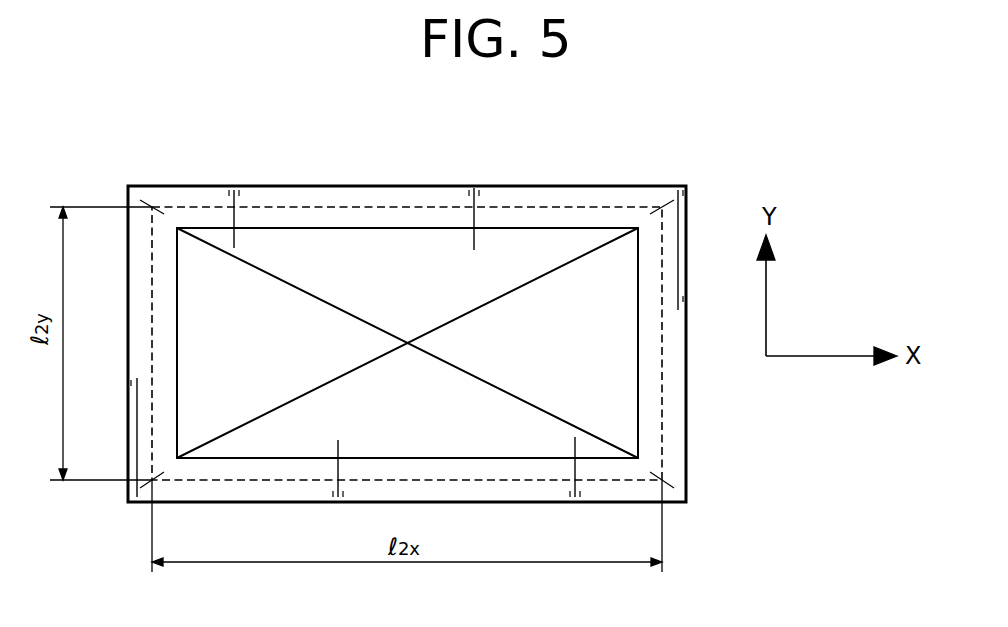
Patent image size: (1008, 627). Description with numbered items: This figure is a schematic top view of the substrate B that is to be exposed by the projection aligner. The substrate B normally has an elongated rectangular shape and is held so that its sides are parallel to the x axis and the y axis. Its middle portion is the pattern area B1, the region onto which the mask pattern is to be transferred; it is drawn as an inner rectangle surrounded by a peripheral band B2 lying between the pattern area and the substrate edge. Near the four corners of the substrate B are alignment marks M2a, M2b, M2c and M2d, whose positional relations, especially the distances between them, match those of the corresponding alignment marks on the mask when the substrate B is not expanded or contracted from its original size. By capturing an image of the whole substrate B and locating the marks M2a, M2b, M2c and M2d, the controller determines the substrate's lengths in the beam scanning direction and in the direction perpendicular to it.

The substrate B is at (686, 265).
The pattern area B1 is at (607, 363).
The peripheral region B2 is at (413, 198).
The alignment mark M2a is at (152, 480).
The alignment mark M2b is at (662, 480).
The alignment mark M2c is at (662, 207).
The alignment mark M2d is at (152, 207).